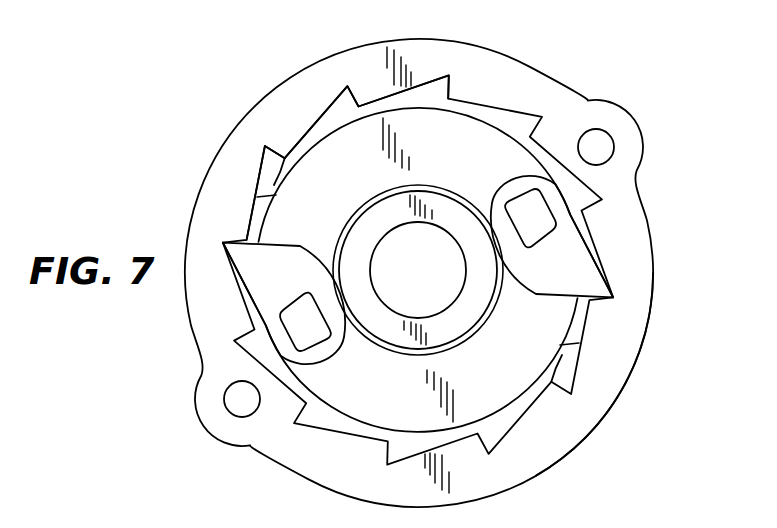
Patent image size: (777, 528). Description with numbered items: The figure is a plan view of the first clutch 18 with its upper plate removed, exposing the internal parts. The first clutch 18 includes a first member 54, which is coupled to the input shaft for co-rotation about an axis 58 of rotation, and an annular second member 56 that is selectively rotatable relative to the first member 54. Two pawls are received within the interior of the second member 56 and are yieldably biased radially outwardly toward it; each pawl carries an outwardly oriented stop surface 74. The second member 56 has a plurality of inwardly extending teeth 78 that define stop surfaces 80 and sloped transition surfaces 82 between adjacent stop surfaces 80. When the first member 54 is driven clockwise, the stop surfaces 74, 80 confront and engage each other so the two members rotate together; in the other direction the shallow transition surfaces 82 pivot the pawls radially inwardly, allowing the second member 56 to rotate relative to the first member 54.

The first clutch 18 is at (592, 456).
The first member 54 is at (516, 126).
The second member 56 is at (641, 311).
The axis of rotation 58 is at (416, 273).
The stop surface 74 is at (288, 247).
The inwardly extending teeth 78 is at (361, 104).
The stop surfaces 80 is at (328, 108).
The transition surfaces 82 is at (307, 143).